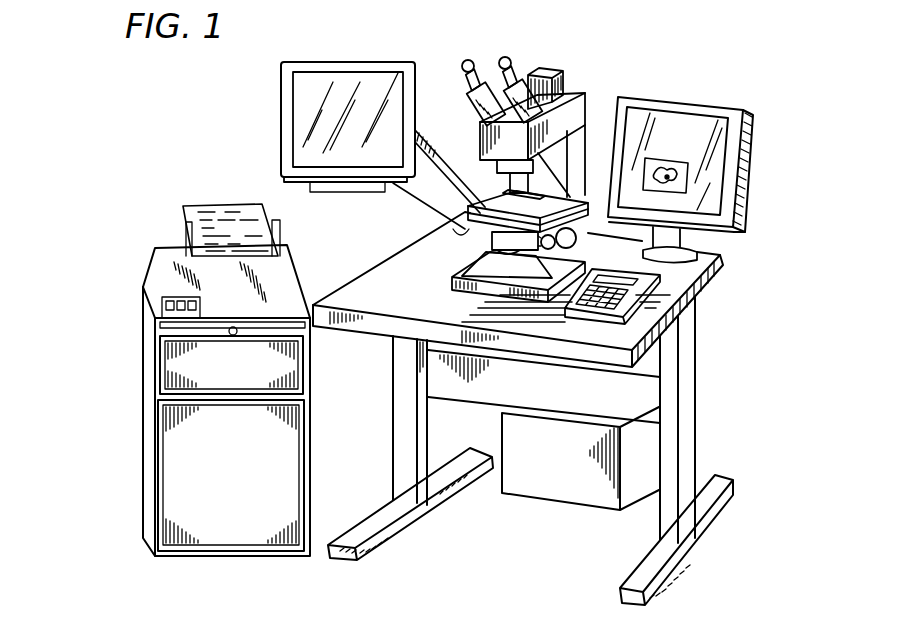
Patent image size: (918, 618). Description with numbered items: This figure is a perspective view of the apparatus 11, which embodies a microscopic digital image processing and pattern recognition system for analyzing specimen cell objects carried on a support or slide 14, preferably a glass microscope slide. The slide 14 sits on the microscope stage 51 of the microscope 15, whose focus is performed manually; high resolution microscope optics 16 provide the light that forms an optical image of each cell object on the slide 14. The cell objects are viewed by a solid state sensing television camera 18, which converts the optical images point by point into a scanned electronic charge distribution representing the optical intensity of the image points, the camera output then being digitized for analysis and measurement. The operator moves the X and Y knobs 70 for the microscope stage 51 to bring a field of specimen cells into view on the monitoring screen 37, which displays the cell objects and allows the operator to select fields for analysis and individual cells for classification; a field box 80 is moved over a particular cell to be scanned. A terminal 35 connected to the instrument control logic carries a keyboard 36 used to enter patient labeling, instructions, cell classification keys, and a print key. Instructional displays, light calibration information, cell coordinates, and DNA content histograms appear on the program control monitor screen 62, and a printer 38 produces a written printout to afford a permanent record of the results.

The apparatus 11 is at (555, 408).
The slide 14 is at (467, 209).
The microscope 15 is at (537, 152).
The microscope optics 16 is at (487, 205).
The television camera 18 is at (585, 100).
The terminal 35 is at (682, 270).
The keyboard 36 is at (657, 307).
The monitoring screen 37 is at (680, 159).
The printer 38 is at (130, 338).
The microscope stage 51 is at (575, 192).
The monitor screen 62 is at (372, 62).
The X and Y knobs 70 is at (577, 238).
The field box 80 is at (688, 162).